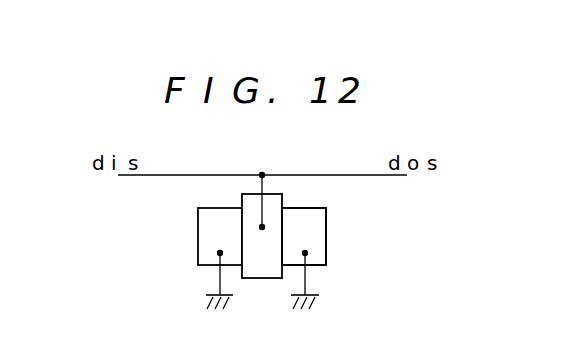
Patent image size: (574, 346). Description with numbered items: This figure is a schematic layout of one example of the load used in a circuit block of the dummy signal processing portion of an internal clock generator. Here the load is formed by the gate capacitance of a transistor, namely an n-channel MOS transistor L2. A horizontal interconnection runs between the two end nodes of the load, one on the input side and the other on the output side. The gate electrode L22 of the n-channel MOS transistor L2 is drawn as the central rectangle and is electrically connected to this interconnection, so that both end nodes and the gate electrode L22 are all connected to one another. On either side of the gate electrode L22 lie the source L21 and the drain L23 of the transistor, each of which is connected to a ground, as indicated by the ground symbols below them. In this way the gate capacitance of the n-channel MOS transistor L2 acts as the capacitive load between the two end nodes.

The n-channel MOS transistor L2 is at (326, 228).
The source L21 is at (197, 240).
The gate electrode L22 is at (283, 198).
The drain L23 is at (314, 242).